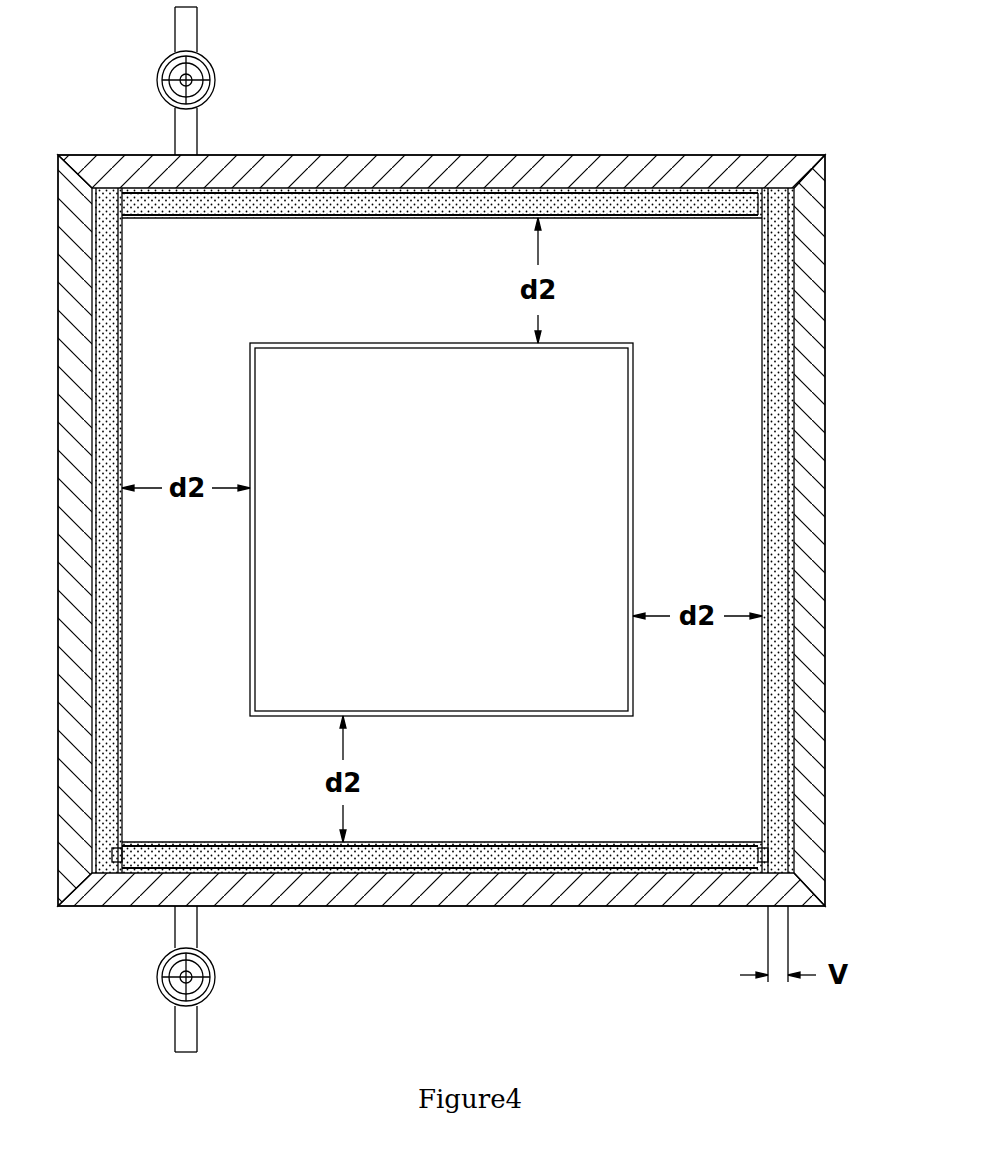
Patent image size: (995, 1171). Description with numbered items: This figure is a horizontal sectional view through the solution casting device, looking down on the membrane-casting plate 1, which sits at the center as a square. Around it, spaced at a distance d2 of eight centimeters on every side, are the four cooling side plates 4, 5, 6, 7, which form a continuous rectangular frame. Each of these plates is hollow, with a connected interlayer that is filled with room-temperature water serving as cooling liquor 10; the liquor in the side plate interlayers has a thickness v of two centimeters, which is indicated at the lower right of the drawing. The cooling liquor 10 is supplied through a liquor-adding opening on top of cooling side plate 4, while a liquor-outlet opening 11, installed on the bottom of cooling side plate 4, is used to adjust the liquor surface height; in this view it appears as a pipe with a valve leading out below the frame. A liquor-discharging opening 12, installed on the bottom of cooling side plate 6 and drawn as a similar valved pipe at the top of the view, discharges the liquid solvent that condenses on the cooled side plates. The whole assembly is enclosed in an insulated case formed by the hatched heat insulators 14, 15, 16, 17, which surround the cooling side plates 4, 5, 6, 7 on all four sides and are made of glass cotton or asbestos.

The membrane-casting plate 1 is at (600, 718).
The cooling side plate 4 is at (760, 305).
The cooling side plate 5 is at (323, 218).
The cooling side plate 6 is at (122, 370).
The cooling side plate 7 is at (522, 840).
The cooling liquor 10 is at (105, 612).
The liquor-outlet opening 11 is at (193, 1028).
The liquor-discharging opening 12 is at (190, 26).
The heat insulator 14 is at (773, 477).
The heat insulator 15 is at (473, 168).
The heat insulator 16 is at (73, 750).
The heat insulator 17 is at (600, 893).